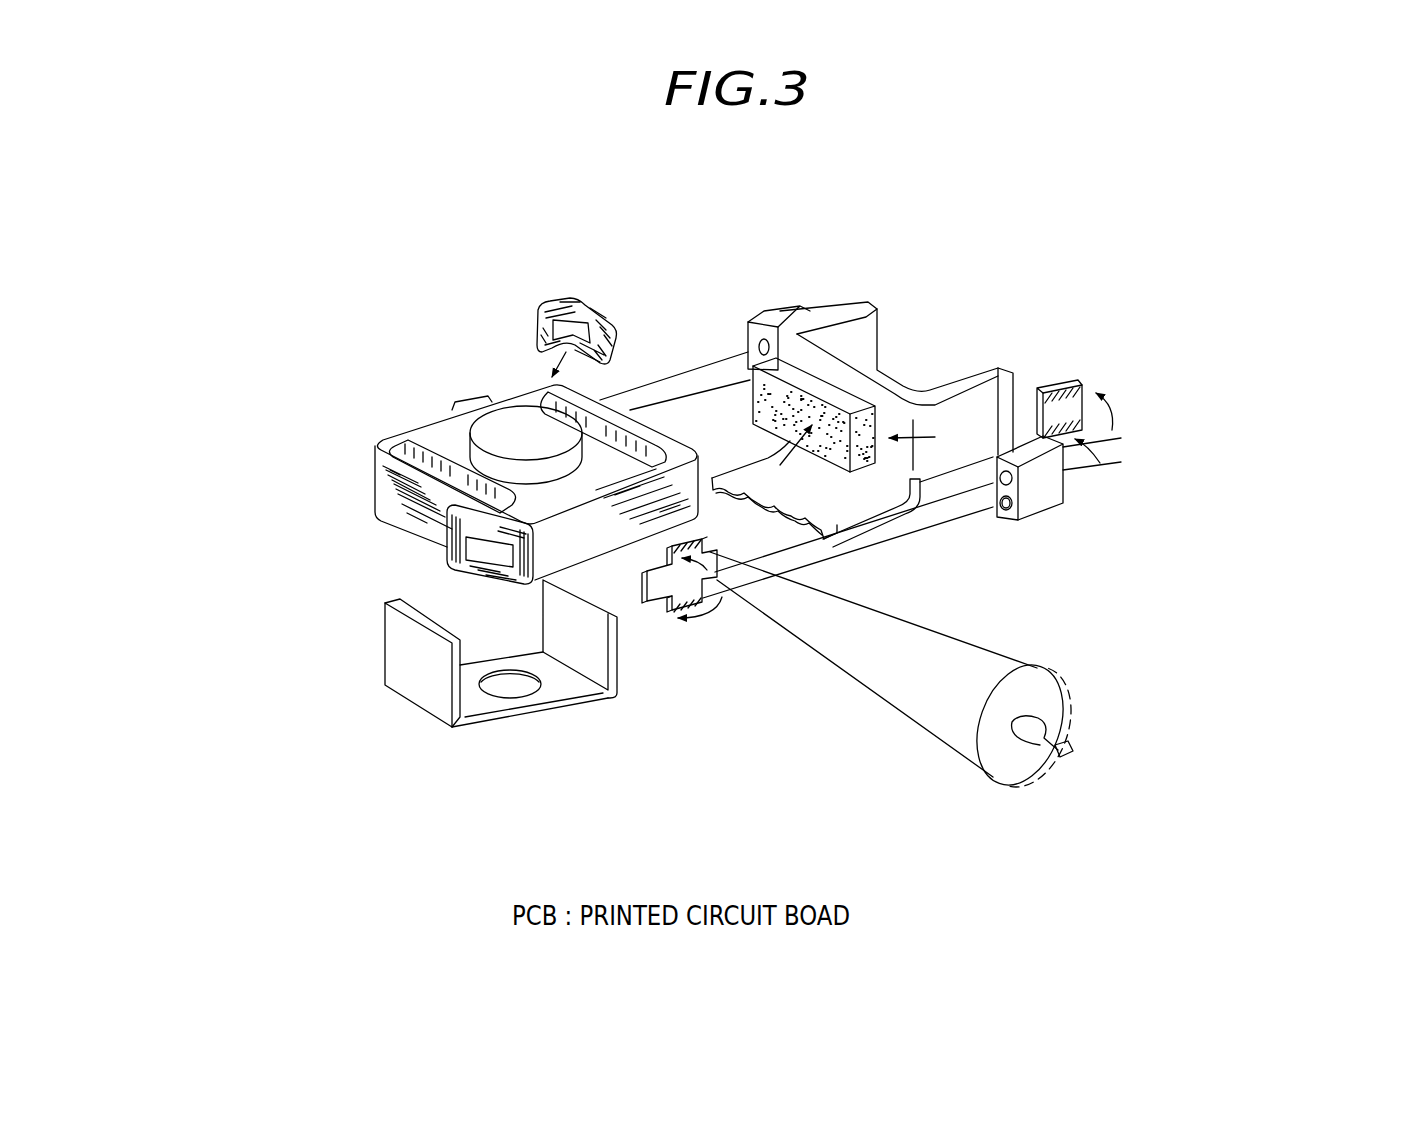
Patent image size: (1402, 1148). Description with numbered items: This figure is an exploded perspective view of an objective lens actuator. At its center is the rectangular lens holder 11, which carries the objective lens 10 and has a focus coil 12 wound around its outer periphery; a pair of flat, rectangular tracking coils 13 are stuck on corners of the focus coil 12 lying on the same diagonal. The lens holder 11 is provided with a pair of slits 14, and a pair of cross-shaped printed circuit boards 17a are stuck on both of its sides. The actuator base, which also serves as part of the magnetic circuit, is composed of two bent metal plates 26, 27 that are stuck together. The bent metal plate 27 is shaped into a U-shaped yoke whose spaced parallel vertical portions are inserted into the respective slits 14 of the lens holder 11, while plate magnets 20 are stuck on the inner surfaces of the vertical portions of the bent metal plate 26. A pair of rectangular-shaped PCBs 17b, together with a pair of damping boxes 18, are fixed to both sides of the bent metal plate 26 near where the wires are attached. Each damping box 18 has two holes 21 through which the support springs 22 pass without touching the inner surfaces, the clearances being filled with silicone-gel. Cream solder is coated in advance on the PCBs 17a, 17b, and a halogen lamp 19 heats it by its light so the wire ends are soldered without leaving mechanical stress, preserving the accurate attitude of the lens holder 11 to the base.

The objective lens 10 is at (523, 425).
The lens holder 11 is at (501, 551).
The focus coil 12 is at (392, 506).
The tracking coil 13 is at (572, 295).
The slit 14 is at (447, 435).
The cross-shaped printed circuit board 17a is at (472, 400).
The rectangular-shaped PCB 17b is at (838, 302).
The damping box 18 is at (770, 320).
The halogen lamp 19 is at (1013, 784).
The plate magnet 20 is at (748, 392).
The hole 21 is at (1003, 512).
The support spring 22 is at (918, 532).
The bent metal plate 26 is at (976, 407).
The bent metal plate 27 is at (423, 694).